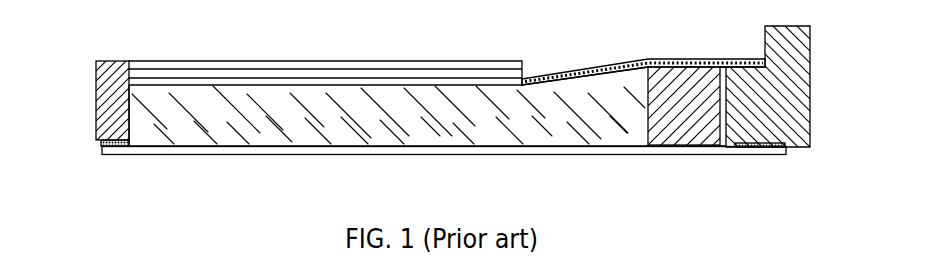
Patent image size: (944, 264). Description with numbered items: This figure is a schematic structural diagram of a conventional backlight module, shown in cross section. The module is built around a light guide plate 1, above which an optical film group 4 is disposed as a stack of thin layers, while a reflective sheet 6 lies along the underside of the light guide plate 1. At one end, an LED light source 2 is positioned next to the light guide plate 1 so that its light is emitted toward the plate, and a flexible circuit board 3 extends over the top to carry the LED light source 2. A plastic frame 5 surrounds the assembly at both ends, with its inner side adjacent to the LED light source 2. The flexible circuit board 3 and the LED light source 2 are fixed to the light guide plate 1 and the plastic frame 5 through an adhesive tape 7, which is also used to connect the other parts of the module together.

The light guide plate 1 is at (328, 128).
The LED light source 2 is at (690, 126).
The flexible circuit board 3 is at (700, 58).
The optical film group 4 is at (328, 82).
The plastic frame 5 is at (110, 104).
The reflective sheet 6 is at (438, 151).
The adhesive tape 7 is at (100, 149).